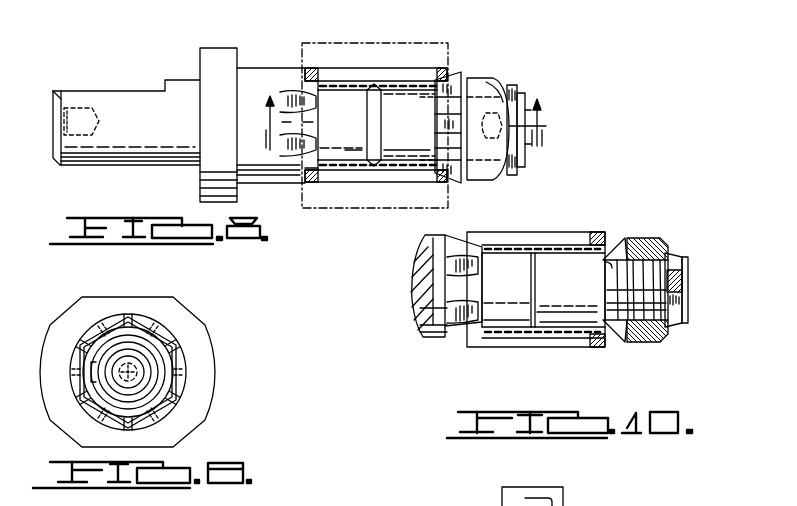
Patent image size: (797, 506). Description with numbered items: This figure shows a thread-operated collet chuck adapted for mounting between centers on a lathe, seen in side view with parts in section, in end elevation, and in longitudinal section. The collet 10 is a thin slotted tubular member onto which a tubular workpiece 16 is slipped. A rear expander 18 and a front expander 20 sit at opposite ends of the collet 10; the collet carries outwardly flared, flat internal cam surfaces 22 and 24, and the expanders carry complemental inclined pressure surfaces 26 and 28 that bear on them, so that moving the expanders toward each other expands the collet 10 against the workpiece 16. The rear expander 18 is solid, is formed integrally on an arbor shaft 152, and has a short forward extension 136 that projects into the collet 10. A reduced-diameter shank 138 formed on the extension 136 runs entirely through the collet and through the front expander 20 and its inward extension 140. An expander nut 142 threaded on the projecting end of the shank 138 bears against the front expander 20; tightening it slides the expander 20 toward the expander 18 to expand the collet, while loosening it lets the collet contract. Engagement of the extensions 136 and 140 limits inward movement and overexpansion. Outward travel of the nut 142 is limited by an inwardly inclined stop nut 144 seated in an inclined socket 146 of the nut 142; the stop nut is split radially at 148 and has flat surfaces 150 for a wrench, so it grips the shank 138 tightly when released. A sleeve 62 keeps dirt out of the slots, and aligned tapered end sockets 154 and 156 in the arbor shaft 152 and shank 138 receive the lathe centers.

In FIG. 8, the collet 10 is at (273, 118).
In FIG. 10, the collet 10 is at (515, 234).
In FIG. 8, the workpiece 16 is at (376, 102).
In FIG. 8, the rear expander 18 is at (256, 75).
In FIG. 9, the rear expander 18 is at (172, 341).
In FIG. 10, the rear expander 18 is at (415, 338).
In FIG. 8, the front expander 20 is at (461, 113).
In FIG. 10, the front expander 20 is at (628, 238).
In FIG. 8, the cam surface 22 is at (307, 78).
In FIG. 8, the cam surface 24 is at (449, 72).
In FIG. 8, the pressure surface 26 is at (307, 147).
In FIG. 10, the pressure surface 26 is at (466, 318).
In FIG. 8, the pressure surface 28 is at (491, 84).
In FIG. 8, the sleeve 62 is at (405, 80).
In FIG. 10, the sleeve 62 is at (560, 247).
In FIG. 8, the forward extension 136 is at (320, 176).
In FIG. 10, the forward extension 136 is at (508, 316).
In FIG. 8, the shank 138 is at (353, 150).
In FIG. 10, the shank 138 is at (585, 299).
In FIG. 8, the inward extension 140 is at (413, 152).
In FIG. 10, the inward extension 140 is at (578, 328).
In FIG. 8, the expander nut 142 is at (490, 170).
In FIG. 9, the expander nut 142 is at (175, 398).
In FIG. 10, the expander nut 142 is at (667, 240).
In FIG. 8, the stop nut 144 is at (528, 98).
In FIG. 9, the stop nut 144 is at (160, 385).
In FIG. 10, the stop nut 144 is at (682, 265).
In FIG. 8, the inclined socket 146 is at (532, 78).
In FIG. 8, the split 148 is at (528, 118).
In FIG. 8, the flat surface 150 is at (517, 142).
In FIG. 9, the flat surface 150 is at (92, 382).
In FIG. 10, the flat surface 150 is at (690, 278).
In FIG. 8, the arbor shaft 152 is at (102, 88).
In FIG. 8, the tapered end socket 154 is at (56, 124).
In FIG. 8, the tapered end socket 156 is at (530, 106).
In FIG. 9, the tapered end socket 156 is at (140, 371).